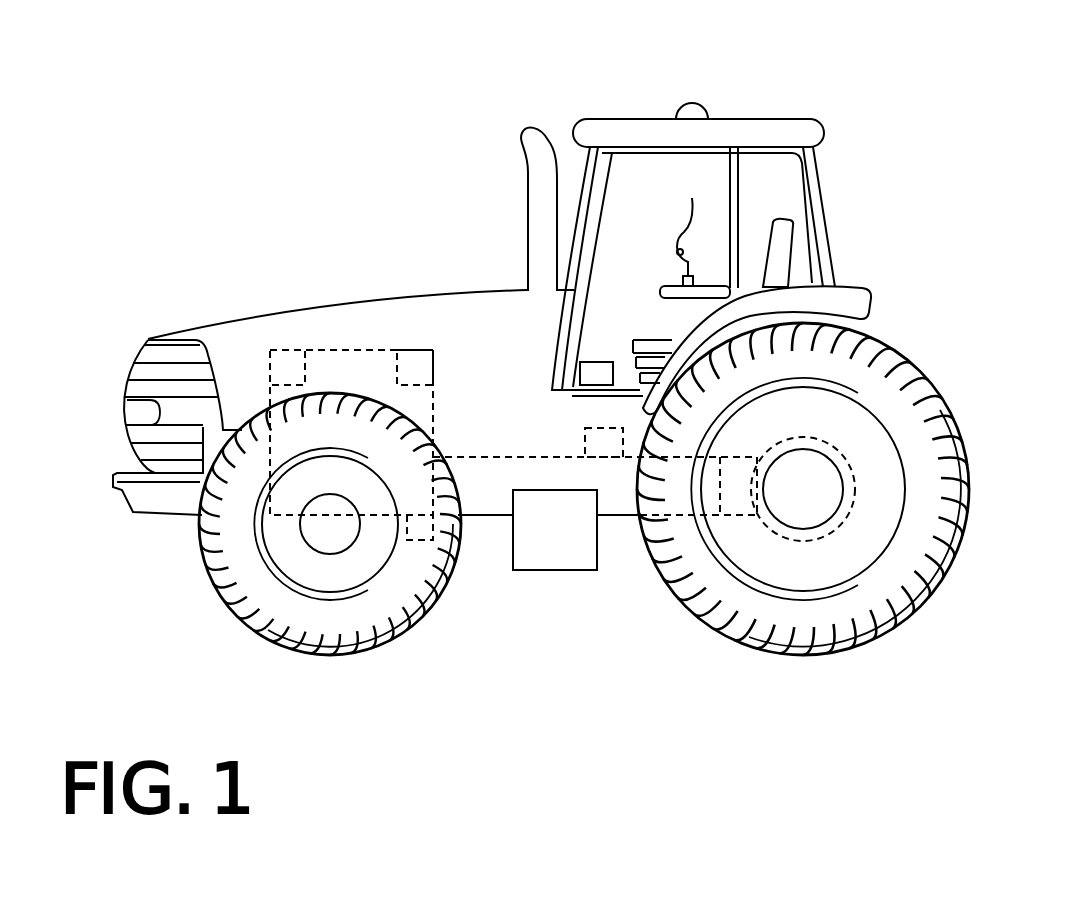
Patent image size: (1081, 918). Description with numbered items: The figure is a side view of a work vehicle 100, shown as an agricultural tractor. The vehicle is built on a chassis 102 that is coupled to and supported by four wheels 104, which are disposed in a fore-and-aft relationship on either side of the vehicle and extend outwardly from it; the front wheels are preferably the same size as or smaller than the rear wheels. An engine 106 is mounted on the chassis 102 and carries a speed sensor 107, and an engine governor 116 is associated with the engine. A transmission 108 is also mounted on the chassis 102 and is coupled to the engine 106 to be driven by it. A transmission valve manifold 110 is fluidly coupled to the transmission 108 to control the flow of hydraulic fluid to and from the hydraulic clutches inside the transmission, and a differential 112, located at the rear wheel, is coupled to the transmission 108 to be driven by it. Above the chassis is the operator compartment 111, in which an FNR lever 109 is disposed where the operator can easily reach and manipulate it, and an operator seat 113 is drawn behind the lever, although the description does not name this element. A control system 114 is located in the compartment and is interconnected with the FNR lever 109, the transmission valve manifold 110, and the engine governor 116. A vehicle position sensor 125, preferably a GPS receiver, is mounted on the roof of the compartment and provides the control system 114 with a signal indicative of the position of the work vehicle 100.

The work vehicle 100 is at (884, 138).
The chassis 102 is at (486, 516).
The wheels 104 is at (322, 656).
The engine 106 is at (335, 350).
The speed sensor 107 is at (297, 350).
The transmission 108 is at (497, 455).
The FNR lever 109 is at (687, 227).
The transmission valve manifold 110 is at (618, 427).
The operator compartment 111 is at (480, 150).
The differential 112 is at (838, 450).
The operator seat 113 is at (788, 220).
The control system 114 is at (598, 360).
The engine governor 116 is at (407, 350).
The vehicle position sensor 125 is at (702, 103).